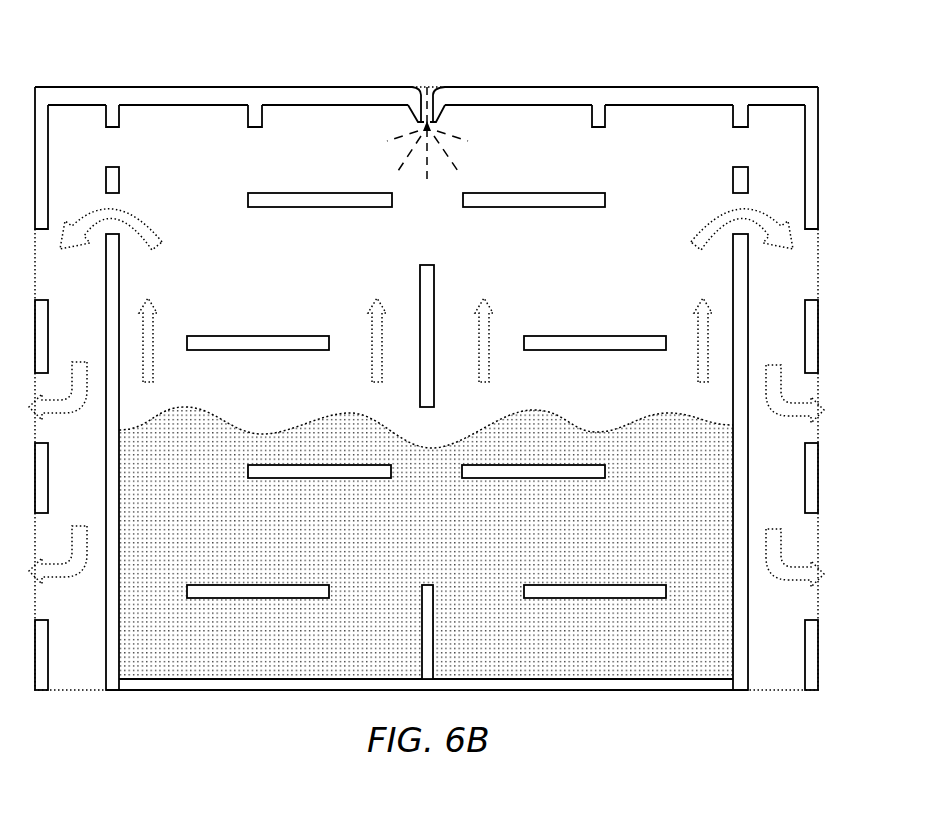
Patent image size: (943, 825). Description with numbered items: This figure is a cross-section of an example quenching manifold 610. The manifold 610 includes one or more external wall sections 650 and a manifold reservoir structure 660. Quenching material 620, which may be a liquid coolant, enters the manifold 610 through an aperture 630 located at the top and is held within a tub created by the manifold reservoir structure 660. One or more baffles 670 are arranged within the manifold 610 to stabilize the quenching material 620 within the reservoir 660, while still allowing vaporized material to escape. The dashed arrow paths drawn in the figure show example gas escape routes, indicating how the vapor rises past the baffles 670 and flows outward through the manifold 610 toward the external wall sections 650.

The manifold 610 is at (137, 87).
The quenching material 620 is at (277, 654).
The aperture 630 is at (420, 87).
The external wall sections 650 is at (782, 93).
The manifold reservoir structure 660 is at (738, 672).
The baffles 670 is at (347, 203).